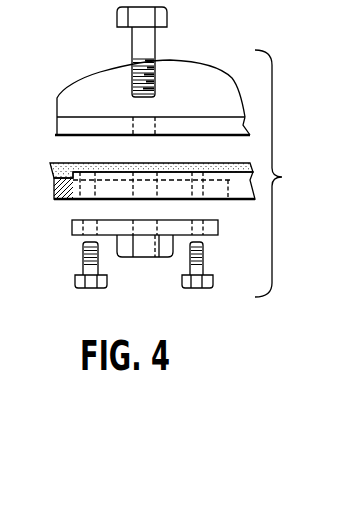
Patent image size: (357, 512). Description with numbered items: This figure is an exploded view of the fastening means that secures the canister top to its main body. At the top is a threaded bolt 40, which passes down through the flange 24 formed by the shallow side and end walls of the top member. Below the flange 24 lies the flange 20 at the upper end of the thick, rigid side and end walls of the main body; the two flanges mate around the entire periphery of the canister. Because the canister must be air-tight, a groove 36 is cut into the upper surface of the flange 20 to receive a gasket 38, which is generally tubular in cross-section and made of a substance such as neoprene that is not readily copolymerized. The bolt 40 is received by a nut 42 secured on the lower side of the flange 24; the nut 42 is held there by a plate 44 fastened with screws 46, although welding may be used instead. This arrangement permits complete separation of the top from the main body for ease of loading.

The threaded bolt 40 is at (133, 38).
The flange 24 is at (213, 120).
The gasket 38 is at (50, 166).
The flange 20 is at (53, 188).
The groove 36 is at (228, 199).
The plate 44 is at (72, 230).
The nut 42 is at (148, 258).
The screws 46 is at (83, 256).